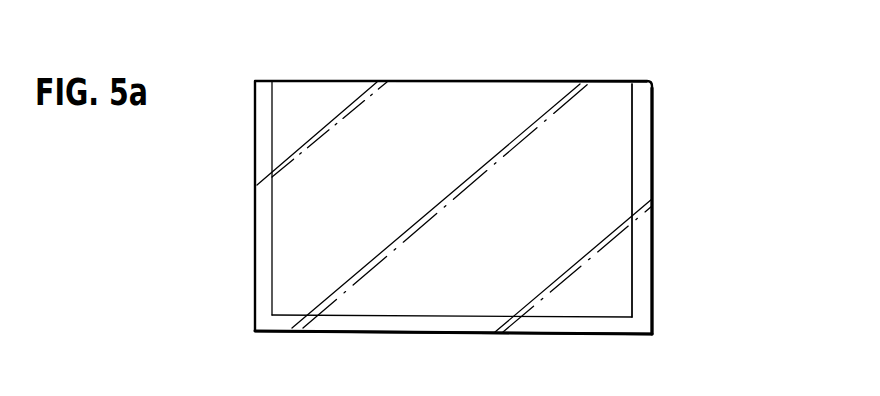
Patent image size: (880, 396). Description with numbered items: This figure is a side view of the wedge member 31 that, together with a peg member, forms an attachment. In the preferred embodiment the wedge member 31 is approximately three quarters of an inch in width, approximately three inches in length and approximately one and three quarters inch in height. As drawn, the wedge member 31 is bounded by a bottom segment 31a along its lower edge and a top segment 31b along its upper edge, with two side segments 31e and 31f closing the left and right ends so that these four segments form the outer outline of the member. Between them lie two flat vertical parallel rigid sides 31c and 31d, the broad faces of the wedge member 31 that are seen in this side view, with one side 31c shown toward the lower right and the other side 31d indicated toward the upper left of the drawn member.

The wedge member 31 is at (665, 83).
The bottom segment 31a is at (450, 334).
The top segment 31b is at (445, 81).
The flat vertical parallel rigid side 31c is at (581, 305).
The flat vertical parallel rigid side 31d is at (290, 132).
The side segment 31e is at (655, 130).
The side segment 31f is at (254, 224).